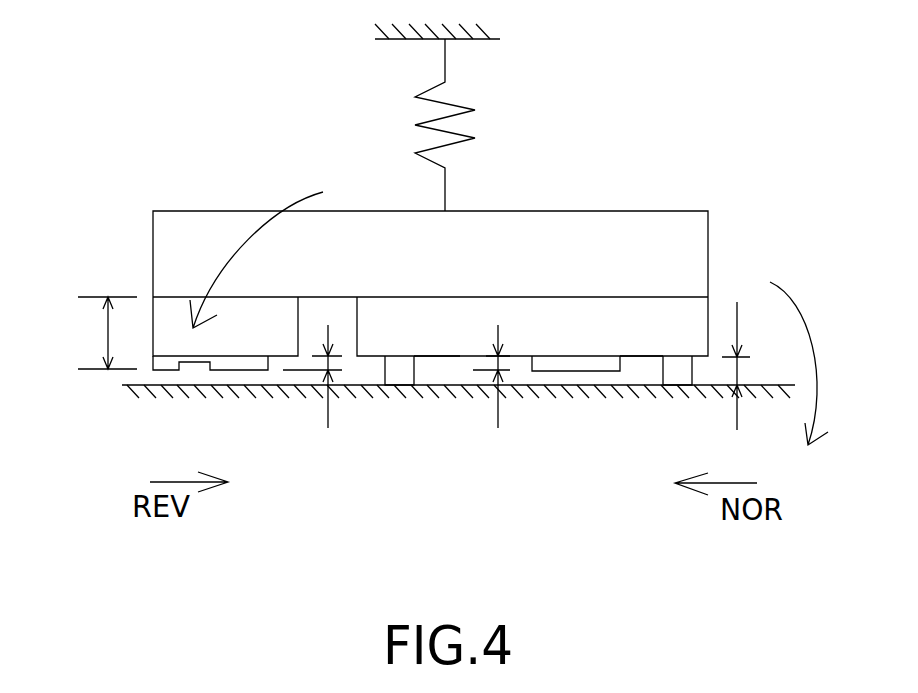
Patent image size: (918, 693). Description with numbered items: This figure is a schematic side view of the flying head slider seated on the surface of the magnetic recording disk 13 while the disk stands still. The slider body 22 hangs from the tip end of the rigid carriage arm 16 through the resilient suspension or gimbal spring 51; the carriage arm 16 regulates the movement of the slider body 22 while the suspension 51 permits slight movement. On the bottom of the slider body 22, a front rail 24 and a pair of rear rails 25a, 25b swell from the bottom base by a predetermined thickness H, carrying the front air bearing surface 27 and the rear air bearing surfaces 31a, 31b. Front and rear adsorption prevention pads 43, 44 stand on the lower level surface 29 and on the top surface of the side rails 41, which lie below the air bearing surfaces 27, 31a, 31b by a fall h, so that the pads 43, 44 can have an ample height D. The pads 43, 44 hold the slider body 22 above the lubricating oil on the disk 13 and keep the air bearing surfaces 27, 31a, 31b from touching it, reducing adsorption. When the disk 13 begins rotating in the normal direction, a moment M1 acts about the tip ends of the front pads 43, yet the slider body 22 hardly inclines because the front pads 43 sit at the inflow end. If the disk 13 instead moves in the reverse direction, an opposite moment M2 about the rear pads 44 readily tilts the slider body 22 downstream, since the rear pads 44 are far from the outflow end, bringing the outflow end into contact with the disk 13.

The magnetic recording disk 13 is at (772, 385).
The carriage arm 16 is at (483, 40).
The slider body 22 is at (533, 218).
The front rail 24 is at (710, 315).
The rear rail 25a is at (161, 299).
The rear rail 25b is at (153, 305).
The front air bearing surface 27 is at (572, 376).
The lower level surface 29 is at (672, 362).
The rear air bearing surface 31a is at (225, 402).
The rear air bearing surface 31b is at (247, 370).
The side rail 41 is at (433, 345).
The front adsorption prevention pad 43 is at (693, 380).
The rear adsorption prevention pad 44 is at (385, 368).
The resilient suspension 51 is at (463, 130).
The moment M1 is at (806, 328).
The moment M2 is at (258, 233).
The predetermined thickness H is at (107, 333).
The height D is at (746, 364).
The fall h is at (407, 387).